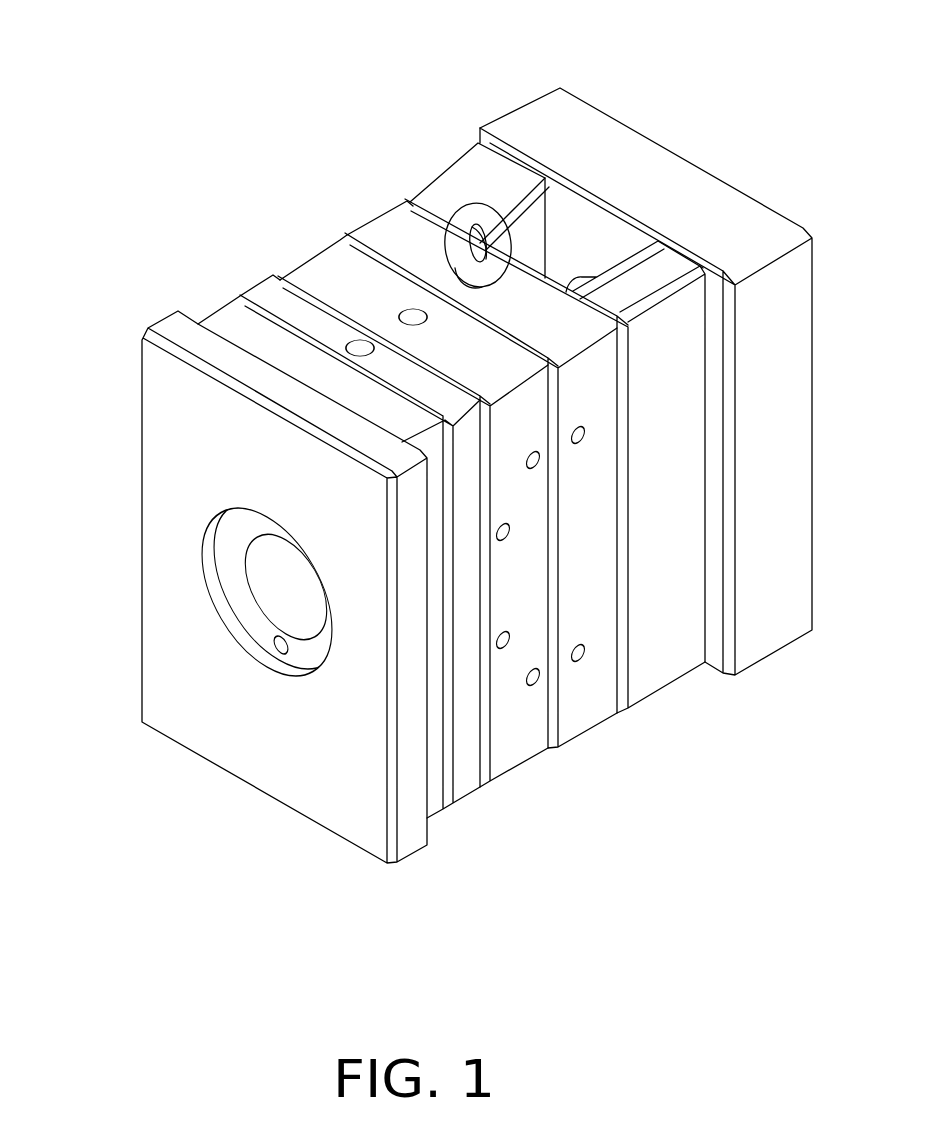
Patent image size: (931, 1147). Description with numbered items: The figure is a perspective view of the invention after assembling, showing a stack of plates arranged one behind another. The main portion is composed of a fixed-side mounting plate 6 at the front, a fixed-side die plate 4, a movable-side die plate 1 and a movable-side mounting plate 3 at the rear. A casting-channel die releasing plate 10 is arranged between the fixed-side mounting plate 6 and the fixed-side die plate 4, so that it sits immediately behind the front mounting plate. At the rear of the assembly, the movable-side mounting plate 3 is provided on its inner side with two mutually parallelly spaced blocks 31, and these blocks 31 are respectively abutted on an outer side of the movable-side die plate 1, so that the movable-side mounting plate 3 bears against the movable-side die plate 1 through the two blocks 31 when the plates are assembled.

The movable-side die plate 1 is at (353, 218).
The movable-side mounting plate 3 is at (510, 94).
The fixed-side die plate 4 is at (273, 244).
The fixed-side mounting plate 6 is at (148, 301).
The casting-channel die releasing plate 10 is at (220, 281).
The blocks 31 is at (463, 191).